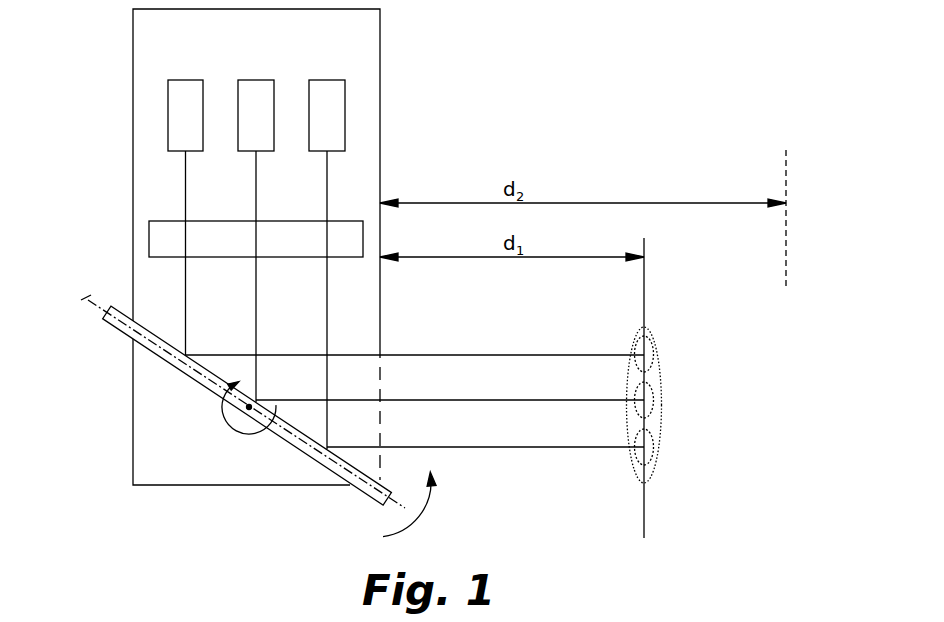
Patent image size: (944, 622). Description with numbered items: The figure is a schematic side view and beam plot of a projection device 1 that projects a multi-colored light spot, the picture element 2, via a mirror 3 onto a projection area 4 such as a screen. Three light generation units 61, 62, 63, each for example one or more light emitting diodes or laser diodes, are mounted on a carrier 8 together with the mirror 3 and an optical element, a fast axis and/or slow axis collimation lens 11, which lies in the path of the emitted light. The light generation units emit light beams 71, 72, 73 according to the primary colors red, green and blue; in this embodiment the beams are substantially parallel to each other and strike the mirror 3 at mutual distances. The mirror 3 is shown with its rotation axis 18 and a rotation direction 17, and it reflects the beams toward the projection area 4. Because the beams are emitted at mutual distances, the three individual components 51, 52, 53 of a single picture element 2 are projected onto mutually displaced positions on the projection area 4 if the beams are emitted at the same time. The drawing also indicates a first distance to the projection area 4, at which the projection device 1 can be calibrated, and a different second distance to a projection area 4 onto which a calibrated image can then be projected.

The projection device 1 is at (500, 141).
The carrier 8 is at (362, 97).
The light generation unit 61 is at (186, 87).
The light generation unit 62 is at (256, 87).
The light generation unit 63 is at (327, 87).
The collimation lens 11 is at (348, 247).
The mirror 3 is at (189, 368).
The rotation axis 18 is at (86, 297).
The rotation direction 17 is at (247, 410).
The projection area 4 is at (645, 290).
The light beam 71 is at (532, 353).
The light beam 72 is at (532, 400).
The light beam 73 is at (532, 446).
The picture element 2 is at (658, 467).
The component 51 is at (655, 350).
The component 52 is at (655, 397).
The component 53 is at (655, 443).